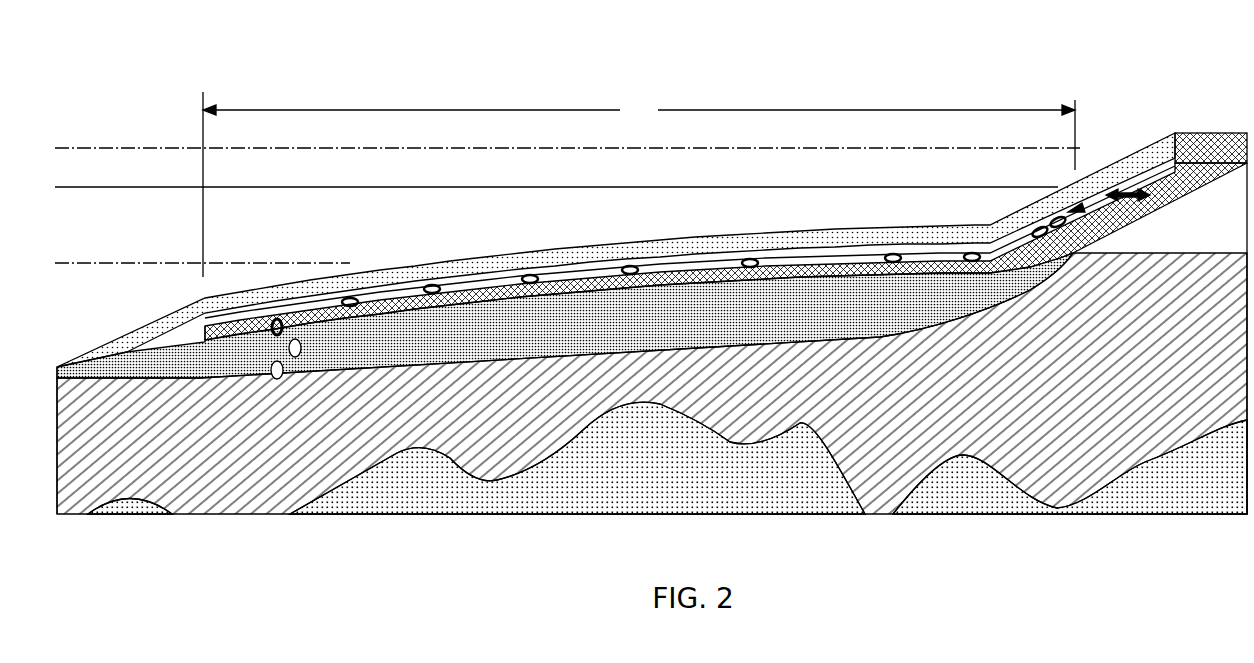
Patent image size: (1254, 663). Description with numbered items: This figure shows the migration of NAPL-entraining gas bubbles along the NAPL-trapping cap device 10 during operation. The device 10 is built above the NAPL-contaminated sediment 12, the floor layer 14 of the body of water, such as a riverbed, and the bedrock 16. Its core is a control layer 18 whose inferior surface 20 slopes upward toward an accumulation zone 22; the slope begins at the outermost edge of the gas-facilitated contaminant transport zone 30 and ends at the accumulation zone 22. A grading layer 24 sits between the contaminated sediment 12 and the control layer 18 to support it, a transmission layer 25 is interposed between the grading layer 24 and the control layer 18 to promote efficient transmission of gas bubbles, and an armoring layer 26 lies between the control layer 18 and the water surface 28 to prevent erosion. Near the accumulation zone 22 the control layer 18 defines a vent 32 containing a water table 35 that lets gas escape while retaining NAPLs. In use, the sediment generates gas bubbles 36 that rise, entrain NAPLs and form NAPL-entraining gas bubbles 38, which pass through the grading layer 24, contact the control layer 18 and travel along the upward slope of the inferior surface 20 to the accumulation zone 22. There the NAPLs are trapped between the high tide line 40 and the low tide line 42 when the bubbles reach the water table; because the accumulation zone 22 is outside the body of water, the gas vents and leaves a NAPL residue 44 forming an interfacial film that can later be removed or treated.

The NAPL-trapping cap device 10 is at (385, 76).
The NAPL-contaminated sediment 12 is at (223, 368).
The floor layer 14 is at (728, 396).
The bedrock 16 is at (633, 496).
The control layer 18 is at (625, 265).
The inferior surface 20 is at (808, 262).
The accumulation zone 22 is at (1210, 125).
The grading layer 24 is at (490, 285).
The transmission layer 25 is at (530, 276).
The armoring layer 26 is at (705, 240).
The water surface 28 is at (645, 187).
The gas-facilitated contaminant transport zone 30 is at (639, 184).
The vent 32 is at (1067, 207).
The water table 35 is at (1137, 197).
The gas bubbles 36 is at (300, 354).
The NAPL-entraining gas bubbles 38 is at (292, 312).
The high tide line 40 is at (555, 148).
The low tide line 42 is at (278, 263).
The NAPL residue 44 is at (1122, 201).